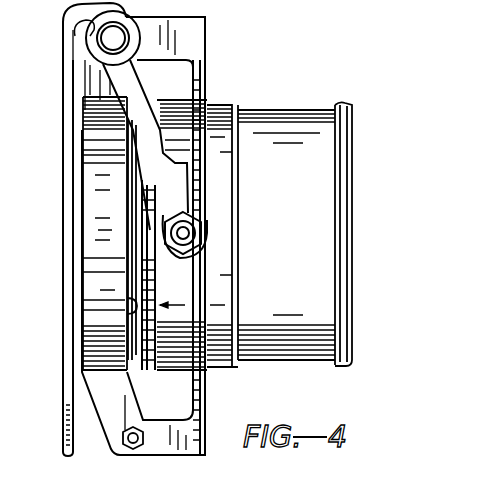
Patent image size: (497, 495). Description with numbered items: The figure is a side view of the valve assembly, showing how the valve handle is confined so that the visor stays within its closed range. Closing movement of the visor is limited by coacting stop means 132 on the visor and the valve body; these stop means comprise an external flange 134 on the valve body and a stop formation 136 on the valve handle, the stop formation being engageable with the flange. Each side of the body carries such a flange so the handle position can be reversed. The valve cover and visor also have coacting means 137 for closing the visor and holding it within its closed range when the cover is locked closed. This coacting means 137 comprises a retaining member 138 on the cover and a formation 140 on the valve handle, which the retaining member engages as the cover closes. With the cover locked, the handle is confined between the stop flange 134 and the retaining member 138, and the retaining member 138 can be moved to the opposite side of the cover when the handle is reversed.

The coacting stop means 132 is at (209, 231).
The external flange 134 is at (197, 197).
The stop formation 136 is at (197, 220).
The coacting means 137 is at (108, 203).
The retaining member 138 is at (117, 260).
The formation 140 is at (128, 218).